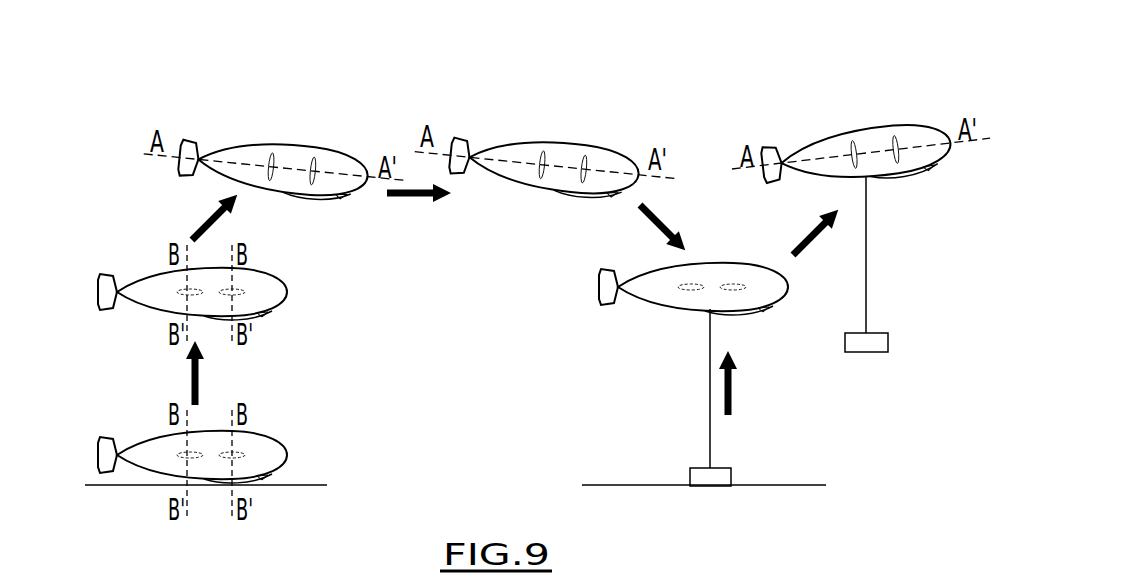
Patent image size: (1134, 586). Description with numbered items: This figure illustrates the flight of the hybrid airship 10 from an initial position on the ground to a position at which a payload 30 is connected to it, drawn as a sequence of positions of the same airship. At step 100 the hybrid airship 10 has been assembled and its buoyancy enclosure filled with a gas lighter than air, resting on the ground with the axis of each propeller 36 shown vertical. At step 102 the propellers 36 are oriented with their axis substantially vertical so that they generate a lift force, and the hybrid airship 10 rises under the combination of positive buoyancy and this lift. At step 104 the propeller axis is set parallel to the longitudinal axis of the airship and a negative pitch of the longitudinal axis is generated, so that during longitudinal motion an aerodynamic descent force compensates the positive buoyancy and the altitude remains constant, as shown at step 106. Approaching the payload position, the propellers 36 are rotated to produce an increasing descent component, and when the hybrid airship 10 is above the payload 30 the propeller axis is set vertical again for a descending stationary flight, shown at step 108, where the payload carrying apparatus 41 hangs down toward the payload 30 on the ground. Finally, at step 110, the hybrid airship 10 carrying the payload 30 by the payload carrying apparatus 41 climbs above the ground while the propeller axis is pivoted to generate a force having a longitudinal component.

The hybrid airship 10 is at (347, 140).
The propeller 36 is at (312, 160).
The payload carrying apparatus 41 is at (710, 403).
The payload 30 is at (731, 476).
The assembly and filling step 100 is at (130, 478).
The lifting step 102 is at (138, 262).
The pitching step 104 is at (212, 122).
The constant-altitude flight step 106 is at (505, 192).
The descending stationary flight step 108 is at (632, 340).
The climbing with payload step 110 is at (933, 200).